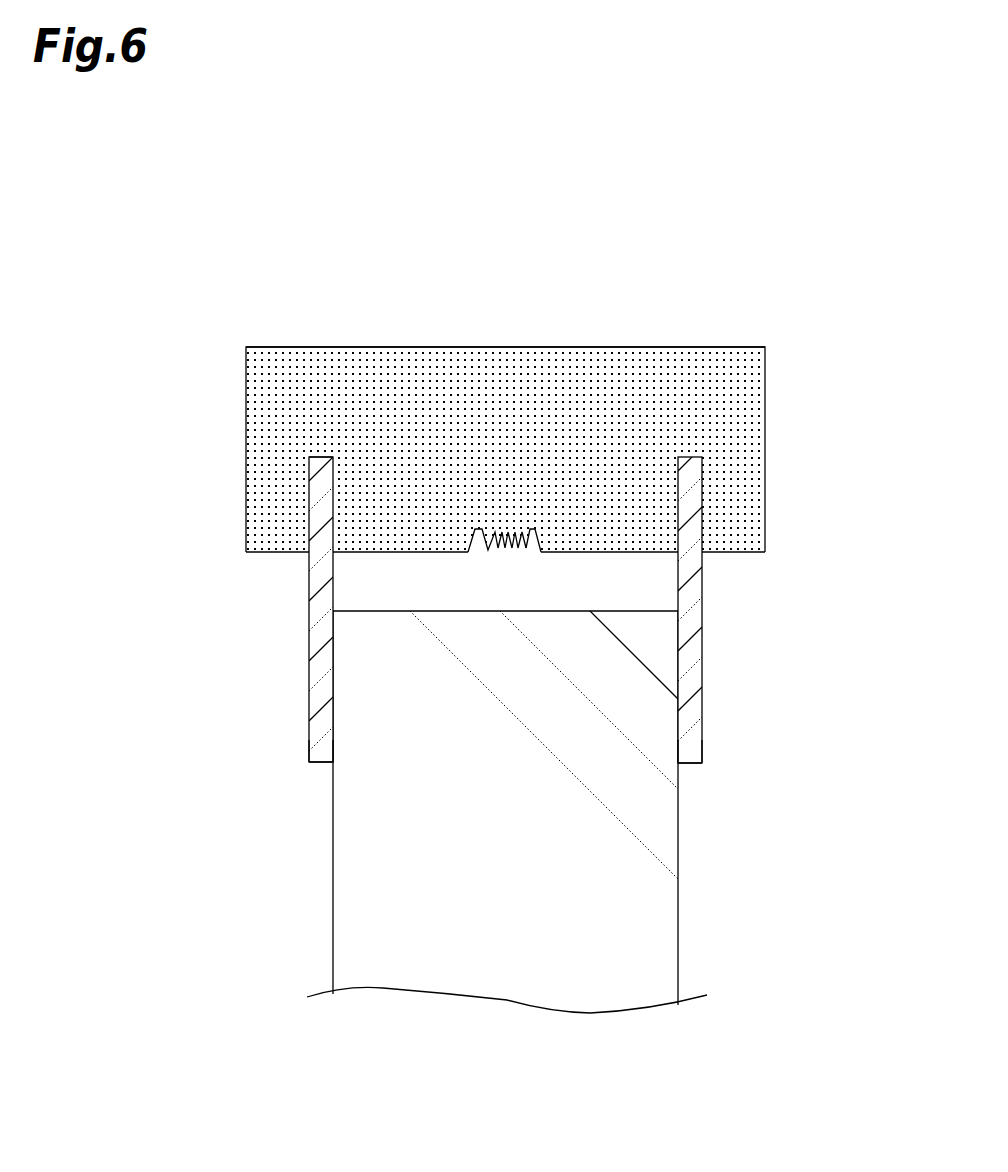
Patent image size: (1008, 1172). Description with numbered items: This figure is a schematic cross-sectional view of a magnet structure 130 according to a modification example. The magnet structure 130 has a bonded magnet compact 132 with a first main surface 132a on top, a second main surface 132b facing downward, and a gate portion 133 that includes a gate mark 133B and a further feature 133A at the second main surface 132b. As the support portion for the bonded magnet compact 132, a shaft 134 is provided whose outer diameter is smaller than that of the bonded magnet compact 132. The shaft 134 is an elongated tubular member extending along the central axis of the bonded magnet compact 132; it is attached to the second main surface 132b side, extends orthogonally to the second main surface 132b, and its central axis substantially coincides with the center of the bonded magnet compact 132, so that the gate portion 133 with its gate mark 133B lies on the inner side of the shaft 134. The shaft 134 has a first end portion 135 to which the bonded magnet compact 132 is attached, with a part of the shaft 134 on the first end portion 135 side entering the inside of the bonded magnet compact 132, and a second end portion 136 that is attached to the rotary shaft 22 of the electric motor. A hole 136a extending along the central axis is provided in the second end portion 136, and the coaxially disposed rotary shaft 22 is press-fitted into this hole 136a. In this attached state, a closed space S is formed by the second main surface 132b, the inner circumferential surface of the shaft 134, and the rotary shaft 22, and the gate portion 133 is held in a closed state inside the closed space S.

The magnet structure 130 is at (762, 214).
The bonded magnet compact 132 is at (624, 344).
The first main surface 132a is at (413, 347).
The second main surface 132b is at (385, 553).
The gate portion 133 is at (830, 560).
The first engagement element 133A is at (530, 548).
The gate mark 133B is at (493, 548).
The shaft 134 is at (320, 667).
The first end portion 135 is at (321, 457).
The second end portion 136 is at (317, 763).
The hole 136a is at (677, 748).
The rotary shaft 22 is at (653, 915).
The closed space S is at (433, 592).